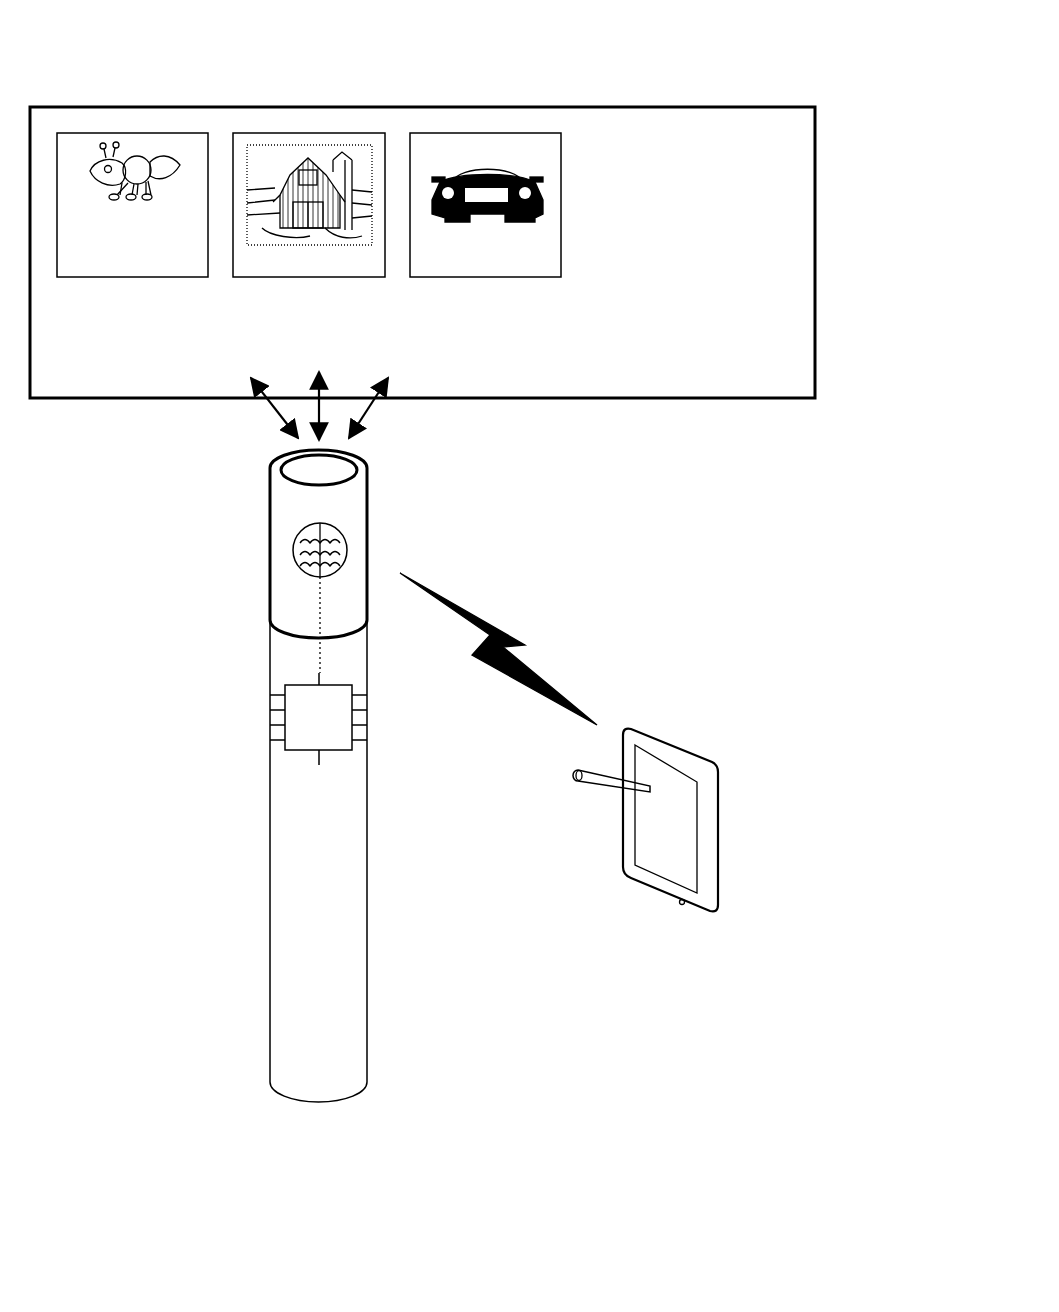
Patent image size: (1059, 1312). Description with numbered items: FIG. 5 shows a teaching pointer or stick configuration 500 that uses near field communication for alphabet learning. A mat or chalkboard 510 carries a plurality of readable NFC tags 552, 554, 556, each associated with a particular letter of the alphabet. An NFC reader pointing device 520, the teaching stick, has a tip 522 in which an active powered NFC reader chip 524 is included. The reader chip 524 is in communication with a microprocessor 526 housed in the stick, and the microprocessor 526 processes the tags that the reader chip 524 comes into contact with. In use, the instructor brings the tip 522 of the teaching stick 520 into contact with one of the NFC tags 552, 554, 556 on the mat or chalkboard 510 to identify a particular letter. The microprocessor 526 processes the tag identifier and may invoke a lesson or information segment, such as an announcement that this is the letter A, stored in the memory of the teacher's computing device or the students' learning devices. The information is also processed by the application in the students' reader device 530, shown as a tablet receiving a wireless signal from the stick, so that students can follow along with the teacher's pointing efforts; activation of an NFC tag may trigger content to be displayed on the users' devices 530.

The teaching pointer or stick configuration 500 is at (55, 84).
The mat or chalkboard 510 is at (732, 107).
The readable NFC tag 552 is at (148, 278).
The readable NFC tag 554 is at (327, 280).
The readable NFC tag 556 is at (507, 280).
The NFC reader pointing device 520 is at (272, 900).
The tip 522 is at (278, 523).
The active powered NFC reader chip 524 is at (345, 553).
The microprocessor 526 is at (282, 723).
The student reader device 530 is at (655, 727).